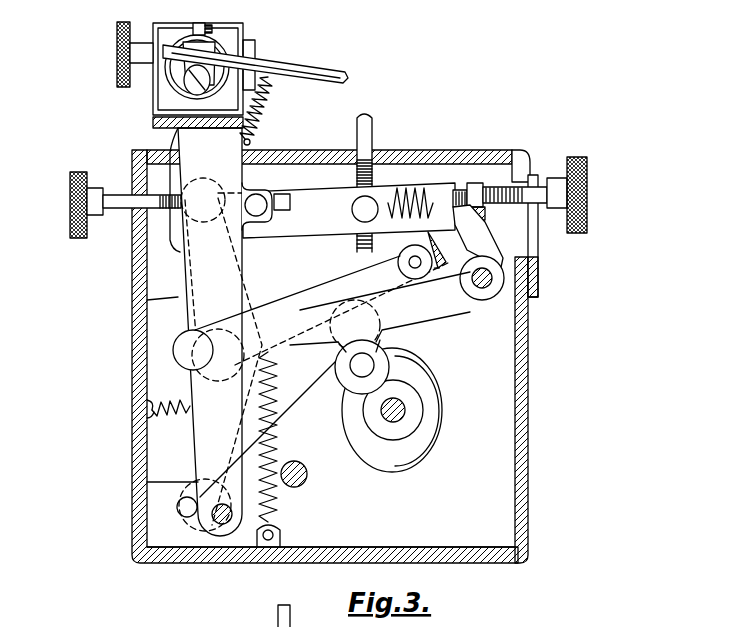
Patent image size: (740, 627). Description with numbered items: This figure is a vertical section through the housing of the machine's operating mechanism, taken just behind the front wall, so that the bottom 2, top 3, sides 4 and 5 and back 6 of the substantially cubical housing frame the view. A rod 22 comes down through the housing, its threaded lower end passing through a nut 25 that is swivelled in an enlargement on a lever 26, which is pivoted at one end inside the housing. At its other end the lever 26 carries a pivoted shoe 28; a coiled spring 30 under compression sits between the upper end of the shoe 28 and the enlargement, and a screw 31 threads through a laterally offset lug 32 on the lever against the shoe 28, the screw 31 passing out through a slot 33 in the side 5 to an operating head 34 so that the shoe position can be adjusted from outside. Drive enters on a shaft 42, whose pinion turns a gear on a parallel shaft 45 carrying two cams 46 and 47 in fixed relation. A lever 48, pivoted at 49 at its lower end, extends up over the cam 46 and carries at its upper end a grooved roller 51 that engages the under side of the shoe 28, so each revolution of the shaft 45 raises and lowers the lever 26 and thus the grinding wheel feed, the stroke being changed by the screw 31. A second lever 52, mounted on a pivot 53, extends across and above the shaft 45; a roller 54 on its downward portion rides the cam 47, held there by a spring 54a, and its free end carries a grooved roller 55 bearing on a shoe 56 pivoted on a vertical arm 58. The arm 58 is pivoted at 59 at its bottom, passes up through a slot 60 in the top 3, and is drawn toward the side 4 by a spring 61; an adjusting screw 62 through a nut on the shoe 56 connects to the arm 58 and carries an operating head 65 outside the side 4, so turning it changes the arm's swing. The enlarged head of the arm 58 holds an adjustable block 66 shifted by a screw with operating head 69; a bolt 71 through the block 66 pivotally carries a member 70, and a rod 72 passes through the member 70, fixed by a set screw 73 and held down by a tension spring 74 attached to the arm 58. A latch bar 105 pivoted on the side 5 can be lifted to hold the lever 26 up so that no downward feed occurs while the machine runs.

The bottom 2 is at (318, 560).
The top 3 is at (416, 190).
The side 4 is at (165, 318).
The side 5 is at (518, 394).
The back 6 is at (498, 478).
The rod 22 is at (374, 130).
The nut 25 is at (360, 222).
The lever 26 is at (304, 230).
The shoe 28 is at (470, 250).
The coiled spring 30 is at (475, 183).
The screw 31 is at (505, 190).
The lug 32 is at (494, 190).
The slot 33 is at (535, 178).
The operating head 34 is at (588, 190).
The shaft 42 is at (300, 480).
The shaft 45 is at (407, 408).
The cam 46 is at (425, 378).
The cam 47 is at (420, 446).
The lever 48 is at (304, 388).
The pivot 49 is at (180, 508).
The grooved roller 51 is at (396, 252).
The second lever 52 is at (444, 300).
The pivot 53 is at (492, 292).
The roller 54 is at (356, 392).
The spring 54a is at (280, 505).
The grooved roller 55 is at (175, 350).
The shoe 56 is at (255, 352).
The arm 58 is at (150, 300).
The pivot 59 is at (226, 502).
The slot 60 is at (262, 162).
The spring 61 is at (180, 420).
The adjusting screw 62 is at (122, 212).
The operating head 65 is at (72, 230).
The block 66 is at (190, 62).
The operating head 69 is at (118, 88).
The member 70 is at (166, 97).
The bolt 71 is at (190, 92).
The rod 72 is at (302, 75).
The set screw 73 is at (212, 28).
The spring 74 is at (266, 110).
The latch bar 105 is at (540, 283).